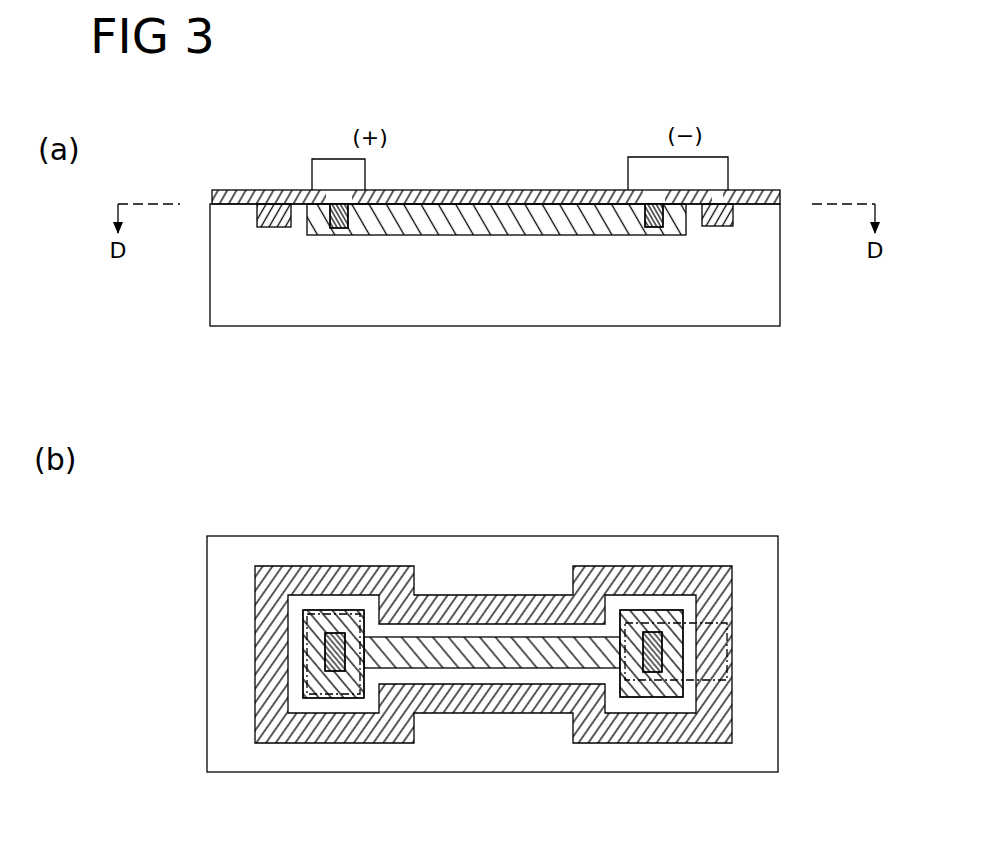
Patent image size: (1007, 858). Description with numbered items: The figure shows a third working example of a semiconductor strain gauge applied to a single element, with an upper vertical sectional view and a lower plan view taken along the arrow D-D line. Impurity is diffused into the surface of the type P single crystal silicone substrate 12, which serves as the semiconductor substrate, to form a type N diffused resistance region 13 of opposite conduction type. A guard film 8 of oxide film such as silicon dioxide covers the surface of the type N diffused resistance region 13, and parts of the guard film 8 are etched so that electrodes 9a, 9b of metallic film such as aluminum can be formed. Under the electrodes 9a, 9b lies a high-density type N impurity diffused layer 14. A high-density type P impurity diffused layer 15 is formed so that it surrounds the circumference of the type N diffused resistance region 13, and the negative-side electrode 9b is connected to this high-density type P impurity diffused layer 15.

The guard film 8 is at (513, 192).
The electrode 9a is at (312, 159).
The electrode 9b is at (724, 157).
The type P single crystal silicone substrate 12 is at (210, 308).
The type N diffused resistance region 13 is at (465, 205).
The high-density type N impurity diffused layer 14 is at (339, 204).
The high-density type P impurity diffused layer 15 is at (257, 227).